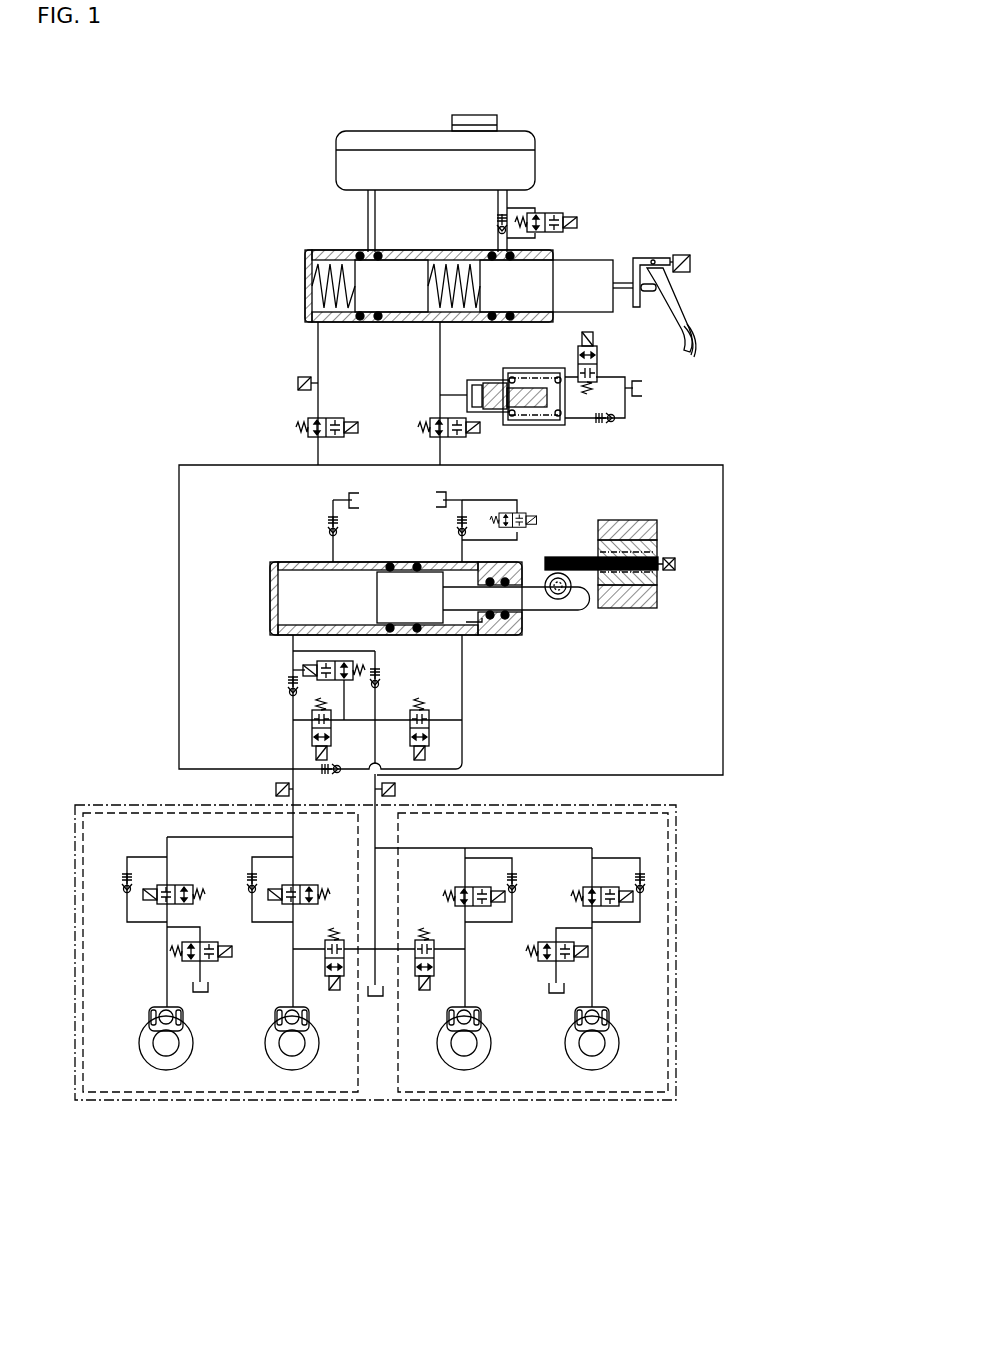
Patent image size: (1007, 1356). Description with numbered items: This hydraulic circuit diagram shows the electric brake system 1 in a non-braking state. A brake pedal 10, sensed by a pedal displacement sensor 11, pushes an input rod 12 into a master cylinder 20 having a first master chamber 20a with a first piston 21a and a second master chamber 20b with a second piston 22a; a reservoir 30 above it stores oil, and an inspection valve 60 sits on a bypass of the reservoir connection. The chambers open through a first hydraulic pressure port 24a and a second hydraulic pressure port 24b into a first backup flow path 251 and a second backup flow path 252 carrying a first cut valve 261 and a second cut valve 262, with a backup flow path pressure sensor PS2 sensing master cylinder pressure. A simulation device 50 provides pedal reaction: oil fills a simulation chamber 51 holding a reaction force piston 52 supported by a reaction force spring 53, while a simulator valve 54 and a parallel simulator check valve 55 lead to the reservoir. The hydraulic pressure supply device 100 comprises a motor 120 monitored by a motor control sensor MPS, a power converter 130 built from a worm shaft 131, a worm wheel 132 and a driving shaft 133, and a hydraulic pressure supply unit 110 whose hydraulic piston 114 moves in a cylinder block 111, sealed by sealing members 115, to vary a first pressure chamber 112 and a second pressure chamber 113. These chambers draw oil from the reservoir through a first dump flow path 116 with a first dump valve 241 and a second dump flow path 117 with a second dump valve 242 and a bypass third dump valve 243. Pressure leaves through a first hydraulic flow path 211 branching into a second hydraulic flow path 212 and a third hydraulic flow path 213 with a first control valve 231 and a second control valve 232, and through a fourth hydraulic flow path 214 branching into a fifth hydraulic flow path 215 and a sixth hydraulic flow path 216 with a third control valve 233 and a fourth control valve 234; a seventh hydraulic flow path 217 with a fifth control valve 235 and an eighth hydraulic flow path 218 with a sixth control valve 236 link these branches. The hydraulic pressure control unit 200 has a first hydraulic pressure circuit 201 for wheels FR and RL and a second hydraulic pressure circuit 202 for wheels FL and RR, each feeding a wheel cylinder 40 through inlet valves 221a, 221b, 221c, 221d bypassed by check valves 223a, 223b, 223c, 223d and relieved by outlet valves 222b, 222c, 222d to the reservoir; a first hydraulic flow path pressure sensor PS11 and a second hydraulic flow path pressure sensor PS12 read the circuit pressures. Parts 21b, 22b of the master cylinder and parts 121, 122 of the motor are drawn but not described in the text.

The electric brake system 1 is at (325, 95).
The brake pedal 10 is at (677, 300).
The pedal displacement sensor 11 is at (688, 261).
The input rod 12 is at (624, 281).
The master cylinder 20 is at (434, 290).
The first master chamber 20a is at (460, 263).
The second master chamber 20b is at (345, 262).
The first piston 21a is at (585, 265).
The first hydraulic port 21b is at (460, 321).
The second piston 22a is at (400, 265).
The second spring 22b is at (312, 285).
The first hydraulic pressure port 24a is at (437, 322).
The second hydraulic pressure port 24b is at (305, 320).
The reservoir 30 is at (366, 130).
The wheel cylinder 40 is at (184, 1019).
The simulation device 50 is at (538, 394).
The simulation chamber 51 is at (537, 368).
The reaction force piston 52 is at (490, 380).
The reaction force spring 53 is at (514, 370).
The simulator valve 54 is at (598, 354).
The simulator check valve 55 is at (608, 427).
The inspection valve 60 is at (568, 214).
The hydraulic pressure supply device 100 is at (260, 521).
The hydraulic pressure supply unit 110 is at (401, 561).
The cylinder block 111 is at (278, 589).
The first pressure chamber 112 is at (290, 600).
The second pressure chamber 113 is at (492, 620).
The hydraulic piston 114 is at (430, 578).
The sealing members 115 is at (391, 562).
The first dump flow path 116 is at (333, 546).
The second dump flow path 117 is at (462, 547).
The motor 120 is at (650, 552).
The stator 121 is at (657, 599).
The rotor 122 is at (657, 580).
The power converter 130 is at (601, 572).
The worm shaft 131 is at (561, 556).
The worm wheel 132 is at (570, 595).
The driving shaft 133 is at (568, 609).
The hydraulic pressure control unit 200 is at (407, 989).
The first hydraulic pressure circuit 201 is at (533, 977).
The second hydraulic pressure circuit 202 is at (322, 1094).
The first hydraulic flow path 211 is at (293, 641).
The second hydraulic flow path 212 is at (373, 651).
The third hydraulic flow path 213 is at (293, 705).
The fourth hydraulic flow path 214 is at (463, 647).
The fifth hydraulic flow path 215 is at (462, 720).
The sixth hydraulic flow path 216 is at (463, 769).
The seventh hydraulic flow path 217 is at (363, 720).
The eighth hydraulic flow path 218 is at (344, 691).
The inlet valve 221a is at (604, 886).
The inlet valve 221b is at (474, 886).
The inlet valve 221c is at (306, 884).
The inlet valve 221d is at (183, 884).
The outlet valve 222b is at (422, 939).
The outlet valve 222c is at (335, 938).
The outlet valve 222d is at (228, 958).
The check valve 223a is at (648, 886).
The check valve 223b is at (517, 890).
The check valve 223c is at (251, 893).
The check valve 223d is at (125, 871).
The first control valve 231 is at (380, 676).
The second control valve 232 is at (286, 684).
The third control valve 233 is at (420, 706).
The fourth control valve 234 is at (333, 773).
The fifth control valve 235 is at (312, 737).
The sixth control valve 236 is at (305, 667).
The first dump valve 241 is at (330, 520).
The second dump valve 242 is at (463, 515).
The third dump valve 243 is at (507, 513).
The first backup flow path 251 is at (440, 362).
The second backup flow path 252 is at (318, 362).
The first cut valve 261 is at (430, 426).
The second cut valve 262 is at (301, 429).
The backup flow path pressure sensor PS2 is at (298, 383).
The first hydraulic flow path pressure sensor PS11 is at (395, 789).
The second hydraulic flow path pressure sensor PS12 is at (276, 789).
The motor control sensor MPS is at (670, 556).